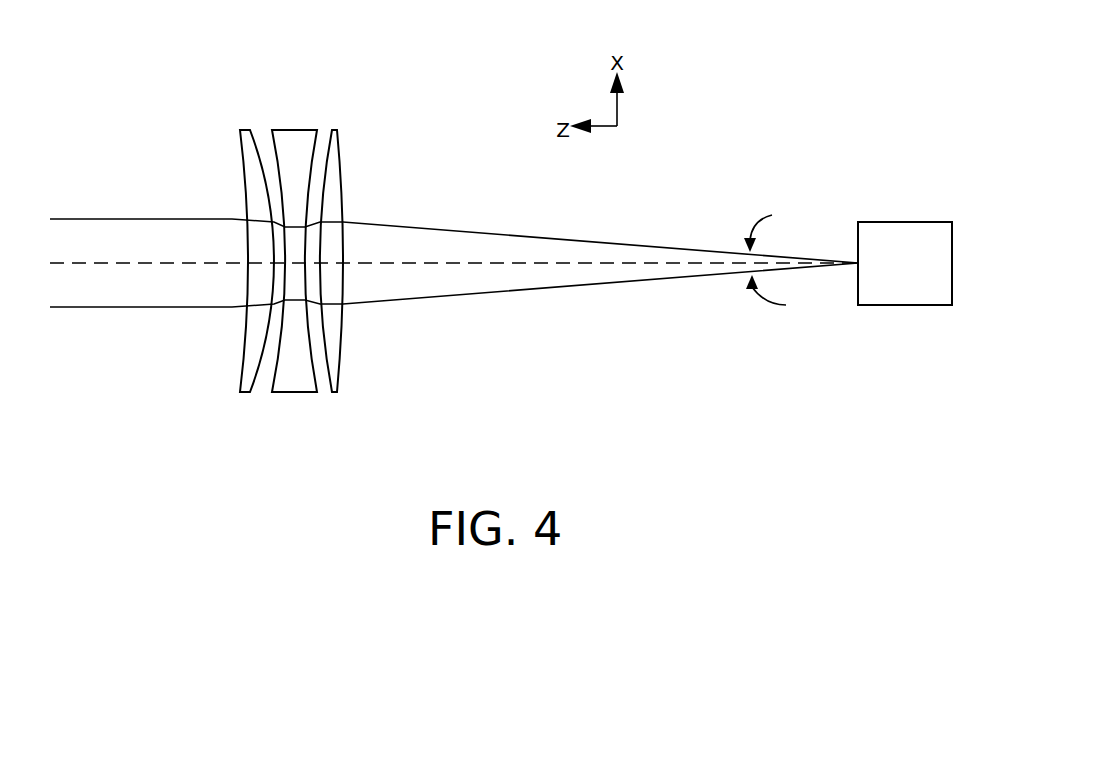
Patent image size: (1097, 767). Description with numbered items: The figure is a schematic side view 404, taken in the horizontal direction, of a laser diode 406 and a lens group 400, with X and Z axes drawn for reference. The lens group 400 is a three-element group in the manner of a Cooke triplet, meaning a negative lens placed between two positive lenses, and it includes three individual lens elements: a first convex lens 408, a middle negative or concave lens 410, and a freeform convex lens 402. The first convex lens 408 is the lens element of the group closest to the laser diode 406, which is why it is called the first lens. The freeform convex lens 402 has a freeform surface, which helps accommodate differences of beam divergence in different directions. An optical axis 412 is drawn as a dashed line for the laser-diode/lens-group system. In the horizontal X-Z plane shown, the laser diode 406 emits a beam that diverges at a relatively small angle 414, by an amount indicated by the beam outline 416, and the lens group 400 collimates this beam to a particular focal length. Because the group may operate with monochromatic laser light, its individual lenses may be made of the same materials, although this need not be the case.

The lens group 400 is at (286, 263).
The freeform convex lens 402 is at (237, 142).
The schematic side view 404 is at (832, 33).
The laser diode 406 is at (905, 263).
The first convex lens 408 is at (339, 142).
The middle negative or concave lens 410 is at (280, 128).
The optical axis 412 is at (93, 263).
The angle 414 is at (784, 267).
The beam outline 416 is at (468, 232).